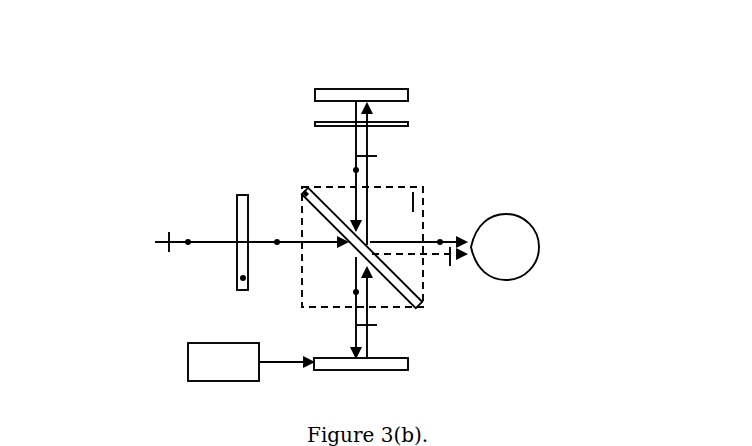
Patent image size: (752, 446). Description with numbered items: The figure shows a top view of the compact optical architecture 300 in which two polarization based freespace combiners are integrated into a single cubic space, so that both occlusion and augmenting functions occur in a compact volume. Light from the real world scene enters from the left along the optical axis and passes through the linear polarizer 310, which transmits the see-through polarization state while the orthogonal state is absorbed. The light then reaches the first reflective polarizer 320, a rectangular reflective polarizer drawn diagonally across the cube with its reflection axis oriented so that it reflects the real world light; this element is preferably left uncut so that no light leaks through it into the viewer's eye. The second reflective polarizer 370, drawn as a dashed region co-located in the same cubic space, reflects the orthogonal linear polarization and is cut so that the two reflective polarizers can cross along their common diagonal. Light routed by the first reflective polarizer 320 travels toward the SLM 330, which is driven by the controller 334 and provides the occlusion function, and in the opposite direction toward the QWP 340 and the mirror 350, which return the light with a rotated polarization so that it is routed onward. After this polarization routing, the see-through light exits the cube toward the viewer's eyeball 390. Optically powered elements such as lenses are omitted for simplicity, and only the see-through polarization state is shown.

The optical system 300 is at (150, 90).
The linear polarizer 310 is at (237, 196).
The first reflective polarizer 320 is at (303, 189).
The SLM 330 is at (408, 362).
The controller 334 is at (250, 362).
The QWP 340 is at (313, 126).
The mirror 350 is at (410, 89).
The second reflective polarizer 370 is at (423, 187).
The viewer's eyeball 390 is at (483, 271).